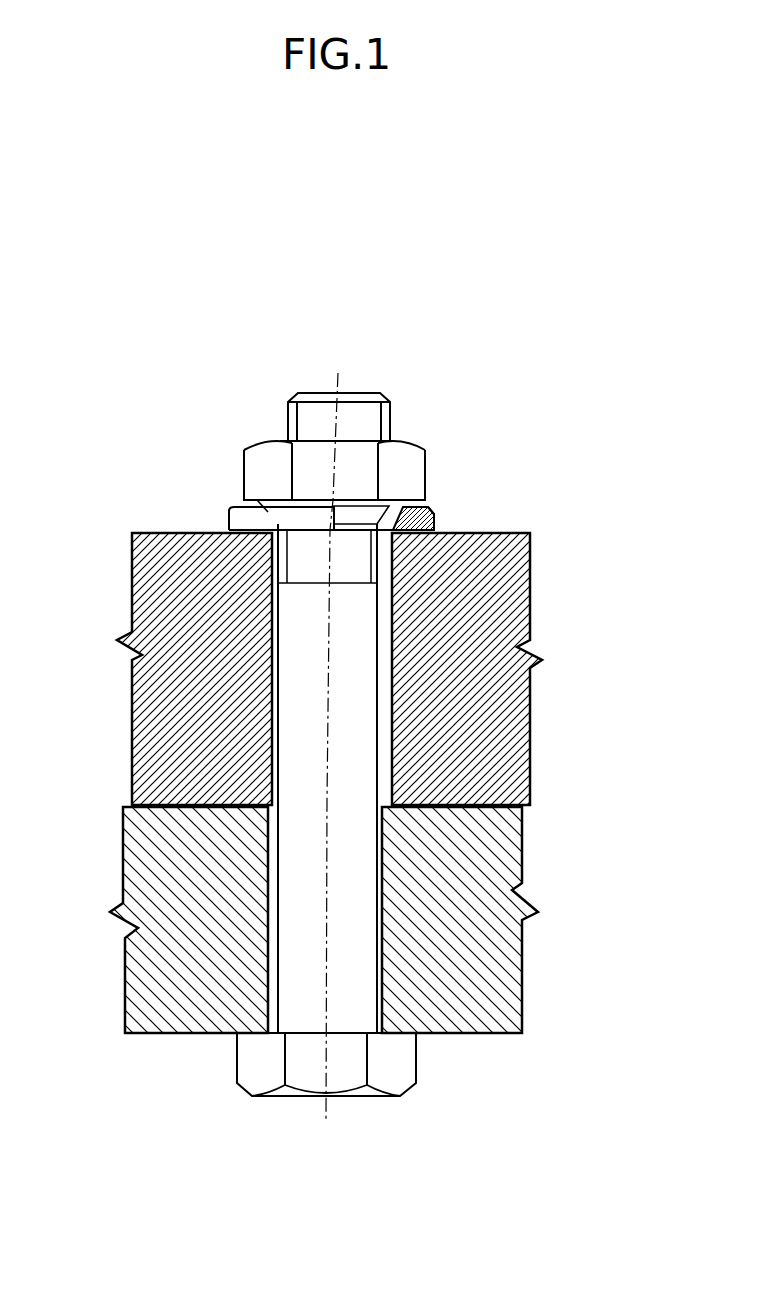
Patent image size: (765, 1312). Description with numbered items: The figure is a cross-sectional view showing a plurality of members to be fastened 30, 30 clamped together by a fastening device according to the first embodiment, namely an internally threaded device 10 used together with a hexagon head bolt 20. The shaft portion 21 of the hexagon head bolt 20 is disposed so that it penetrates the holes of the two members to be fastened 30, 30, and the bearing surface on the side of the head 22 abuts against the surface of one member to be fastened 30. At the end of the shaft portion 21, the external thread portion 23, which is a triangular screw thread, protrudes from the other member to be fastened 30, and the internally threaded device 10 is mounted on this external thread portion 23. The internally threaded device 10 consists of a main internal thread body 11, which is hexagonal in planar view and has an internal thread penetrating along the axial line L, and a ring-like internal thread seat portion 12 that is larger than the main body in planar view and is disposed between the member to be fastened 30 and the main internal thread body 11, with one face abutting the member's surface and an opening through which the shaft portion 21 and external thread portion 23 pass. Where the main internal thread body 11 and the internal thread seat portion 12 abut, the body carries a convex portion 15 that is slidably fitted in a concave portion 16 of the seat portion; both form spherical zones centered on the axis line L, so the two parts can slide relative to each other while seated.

The internally threaded device 10 is at (291, 455).
The main internal thread body 11 is at (258, 470).
The internal thread seat portion 12 is at (228, 528).
The convex portion 15 is at (386, 499).
The concave portion 16 is at (432, 513).
The hexagon head bolt 20 is at (355, 759).
The shaft portion 21 is at (360, 623).
The head 22 is at (305, 1072).
The external thread portion 23 is at (366, 394).
The member to be fastened 30 is at (529, 740).
The axial line L is at (330, 380).